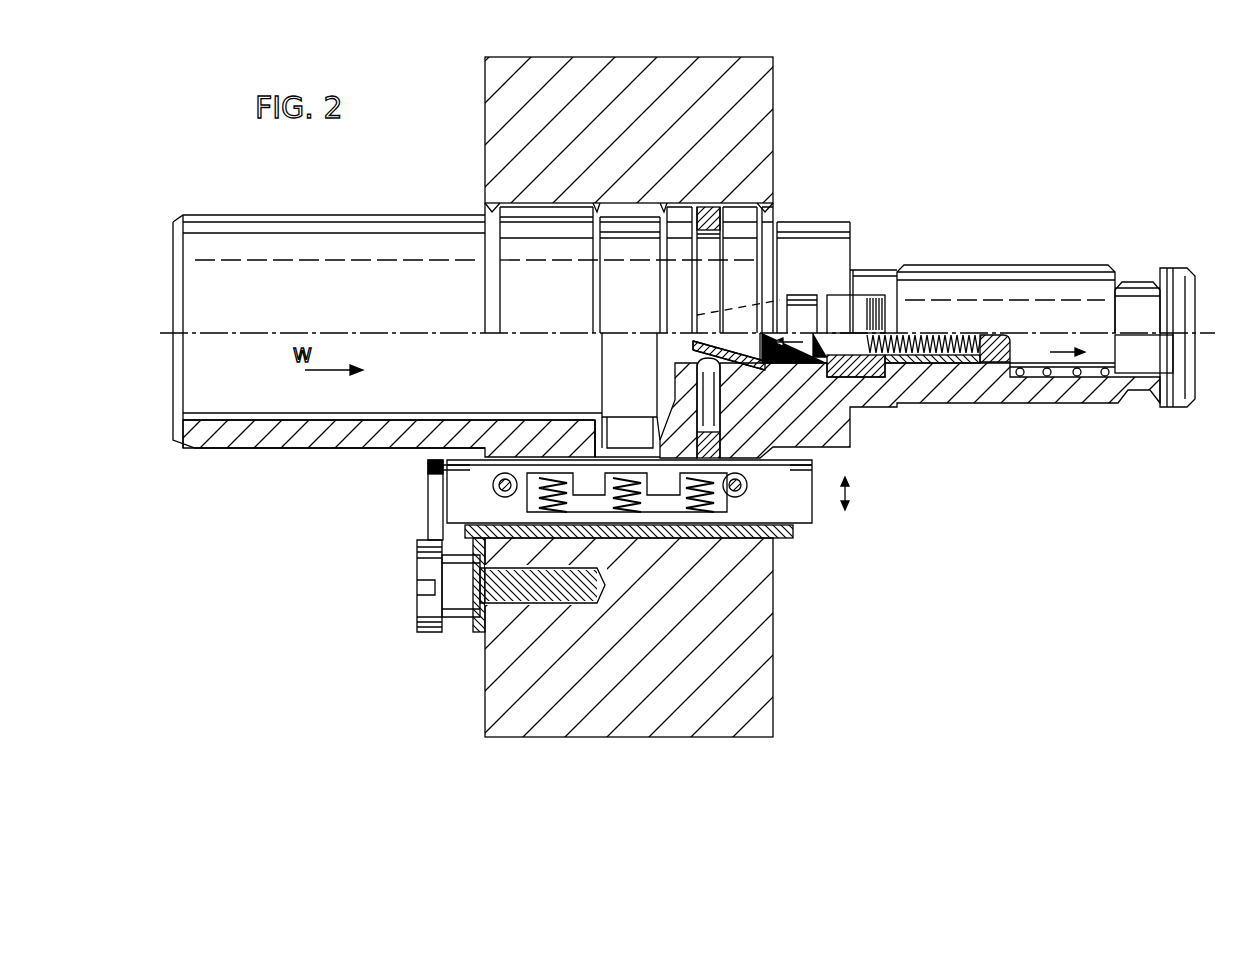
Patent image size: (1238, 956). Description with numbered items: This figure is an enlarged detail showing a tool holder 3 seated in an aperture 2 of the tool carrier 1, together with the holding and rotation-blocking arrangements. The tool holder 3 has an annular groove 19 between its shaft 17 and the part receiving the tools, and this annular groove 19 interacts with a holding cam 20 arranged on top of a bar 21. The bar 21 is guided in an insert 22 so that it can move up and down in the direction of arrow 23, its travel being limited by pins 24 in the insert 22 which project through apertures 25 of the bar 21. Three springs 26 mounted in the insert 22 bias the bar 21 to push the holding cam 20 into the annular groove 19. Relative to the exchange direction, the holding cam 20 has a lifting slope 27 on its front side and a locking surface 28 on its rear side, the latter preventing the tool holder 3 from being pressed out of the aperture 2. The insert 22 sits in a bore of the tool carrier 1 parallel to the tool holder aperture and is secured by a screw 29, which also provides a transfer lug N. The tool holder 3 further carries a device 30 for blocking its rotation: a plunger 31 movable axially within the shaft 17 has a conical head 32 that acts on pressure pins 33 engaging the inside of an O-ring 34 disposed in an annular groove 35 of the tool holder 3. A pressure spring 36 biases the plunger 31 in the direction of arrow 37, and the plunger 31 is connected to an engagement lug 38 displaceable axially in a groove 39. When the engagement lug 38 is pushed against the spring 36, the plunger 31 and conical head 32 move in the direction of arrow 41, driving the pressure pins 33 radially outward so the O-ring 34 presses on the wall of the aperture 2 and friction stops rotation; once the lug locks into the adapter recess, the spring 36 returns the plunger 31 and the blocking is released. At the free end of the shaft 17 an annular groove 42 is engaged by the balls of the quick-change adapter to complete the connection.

The tool carrier 1 is at (492, 88).
The aperture 2 is at (778, 213).
The tool holder 3 is at (410, 235).
The shaft 17 is at (985, 288).
The annular groove 19 is at (625, 225).
The holding cam 20 is at (628, 437).
The bar 21 is at (802, 530).
The insert 22 is at (787, 540).
The arrow 23 is at (862, 493).
The pins 24 is at (493, 486).
The apertures 25 is at (440, 466).
The springs 26 is at (635, 515).
The lifting slope 27 is at (600, 440).
The locking surface 28 is at (665, 442).
The screw 29 is at (460, 605).
The device for blocking rotation 30 is at (905, 380).
The plunger 31 is at (975, 377).
The conical head 32 is at (690, 346).
The pressure pins 33 is at (712, 395).
The O-ring 34 is at (705, 222).
The annular groove 35 is at (710, 270).
The pressure spring 36 is at (1080, 378).
The arrow 37 is at (1050, 378).
The engagement lug 38 is at (860, 300).
The groove 39 is at (800, 300).
The arrow 41 is at (810, 362).
The annular groove 42 is at (1135, 290).
The transfer lug N is at (430, 514).